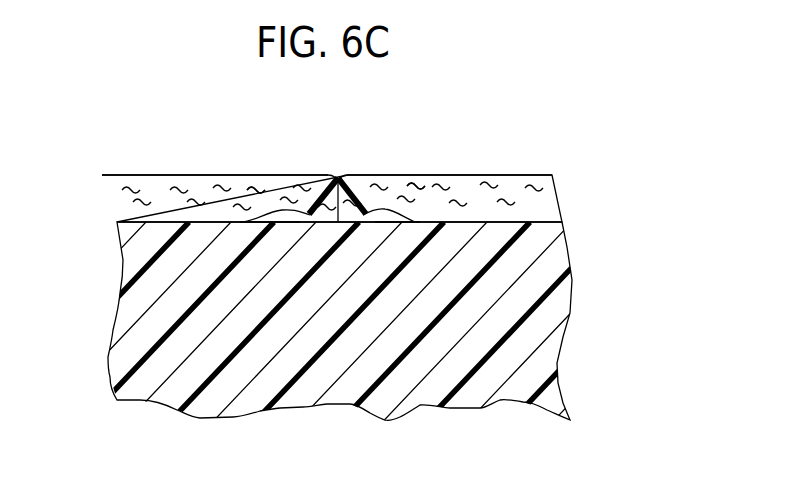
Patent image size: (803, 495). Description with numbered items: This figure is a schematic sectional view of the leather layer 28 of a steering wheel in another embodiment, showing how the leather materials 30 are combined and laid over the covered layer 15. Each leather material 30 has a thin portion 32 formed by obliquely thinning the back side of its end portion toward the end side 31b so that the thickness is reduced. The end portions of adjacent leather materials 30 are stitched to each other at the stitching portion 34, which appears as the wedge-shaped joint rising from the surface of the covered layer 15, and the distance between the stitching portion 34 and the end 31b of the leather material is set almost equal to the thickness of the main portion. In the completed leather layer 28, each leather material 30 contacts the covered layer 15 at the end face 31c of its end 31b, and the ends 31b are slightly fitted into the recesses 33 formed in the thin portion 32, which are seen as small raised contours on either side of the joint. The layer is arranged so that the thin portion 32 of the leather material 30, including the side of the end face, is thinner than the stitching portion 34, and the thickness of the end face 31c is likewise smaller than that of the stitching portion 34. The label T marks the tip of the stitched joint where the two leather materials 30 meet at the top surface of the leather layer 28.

The covered layer 15 is at (548, 363).
The leather layer 28 is at (506, 157).
The leather material 30 is at (134, 182).
The end side 31b is at (333, 212).
The end face 31c is at (331, 222).
The thin portion 32 is at (262, 207).
The recess 33 is at (285, 222).
The stitching portion 34 is at (318, 198).
The tip T is at (342, 177).